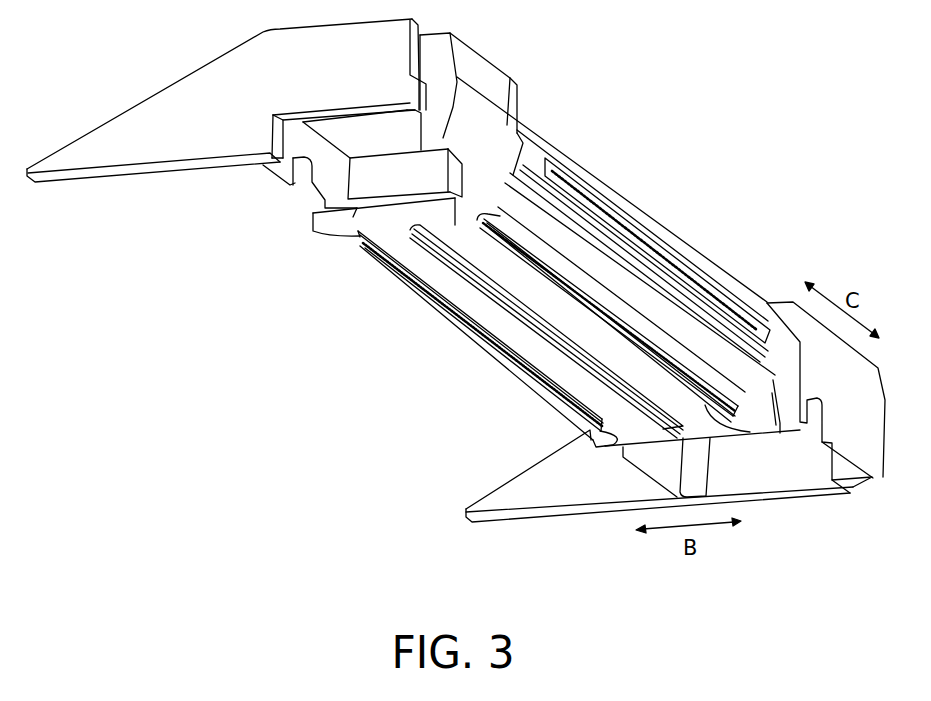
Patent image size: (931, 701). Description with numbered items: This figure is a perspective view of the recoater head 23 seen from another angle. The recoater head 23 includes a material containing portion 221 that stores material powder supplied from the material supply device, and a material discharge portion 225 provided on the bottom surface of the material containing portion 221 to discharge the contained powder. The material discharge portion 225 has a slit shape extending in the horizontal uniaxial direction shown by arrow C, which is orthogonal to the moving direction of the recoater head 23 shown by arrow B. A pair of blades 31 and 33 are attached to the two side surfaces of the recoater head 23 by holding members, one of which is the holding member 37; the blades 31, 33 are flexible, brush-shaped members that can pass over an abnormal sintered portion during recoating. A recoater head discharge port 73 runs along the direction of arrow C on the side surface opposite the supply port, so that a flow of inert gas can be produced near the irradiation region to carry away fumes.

The recoater head 23 is at (677, 187).
The blade 31 is at (397, 277).
The blade 33 is at (563, 272).
The holding member 37 is at (525, 237).
The recoater head discharge port 73 is at (713, 268).
The material containing portion 221 is at (585, 390).
The material discharge portion 225 is at (477, 288).